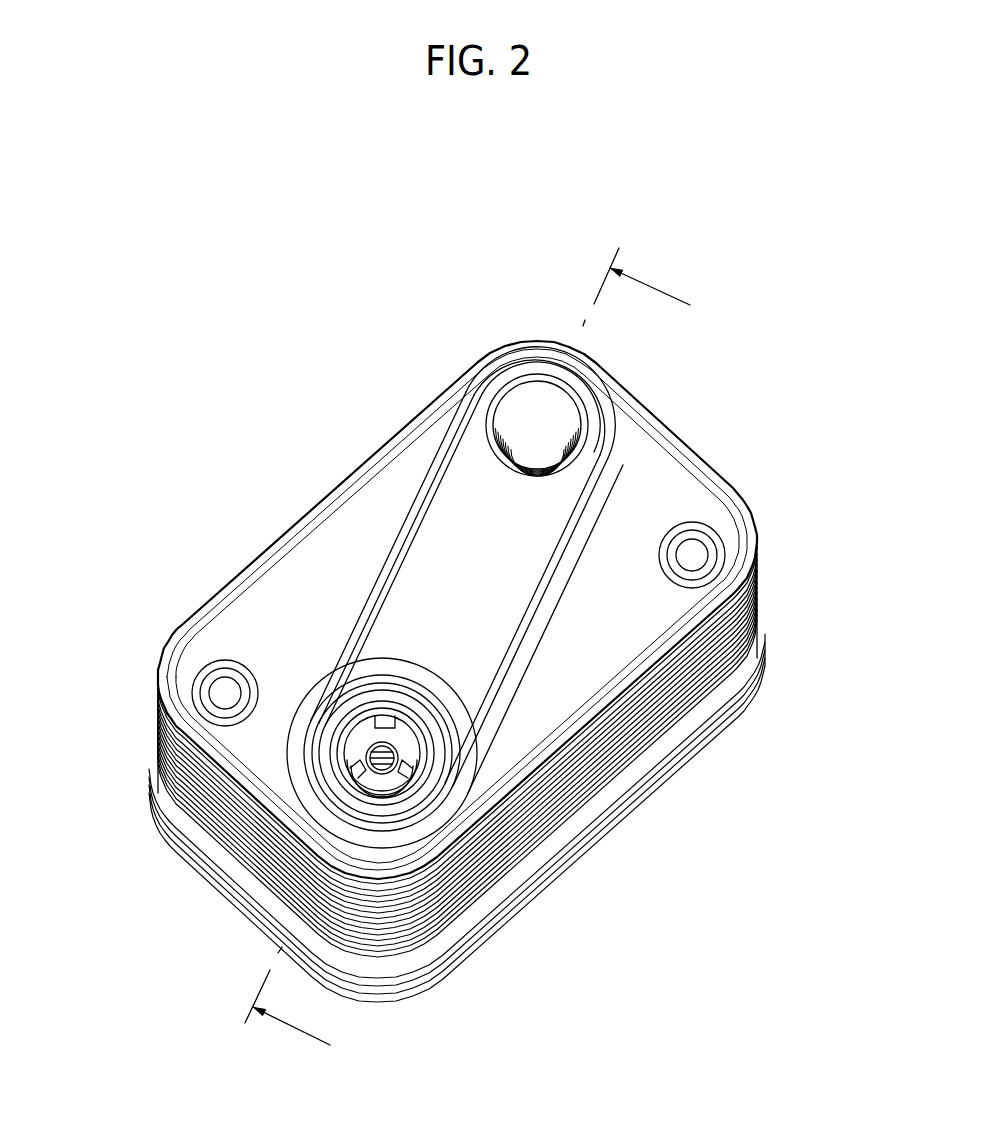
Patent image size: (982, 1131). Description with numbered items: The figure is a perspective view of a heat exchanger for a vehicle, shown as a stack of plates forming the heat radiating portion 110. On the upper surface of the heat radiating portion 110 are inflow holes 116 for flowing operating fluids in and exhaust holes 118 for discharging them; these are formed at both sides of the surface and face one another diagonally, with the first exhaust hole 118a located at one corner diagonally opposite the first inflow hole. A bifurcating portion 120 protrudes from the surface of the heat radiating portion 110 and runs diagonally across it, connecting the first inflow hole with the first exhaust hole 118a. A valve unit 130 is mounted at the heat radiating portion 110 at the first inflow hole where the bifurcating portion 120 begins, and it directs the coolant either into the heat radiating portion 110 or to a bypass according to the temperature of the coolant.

The heat radiating portion 110 is at (323, 490).
The inflow holes 116 is at (353, 703).
The exhaust holes 118 is at (500, 386).
The first exhaust hole 118a is at (537, 390).
The bifurcating portion 120 is at (447, 560).
The valve unit 130 is at (360, 742).